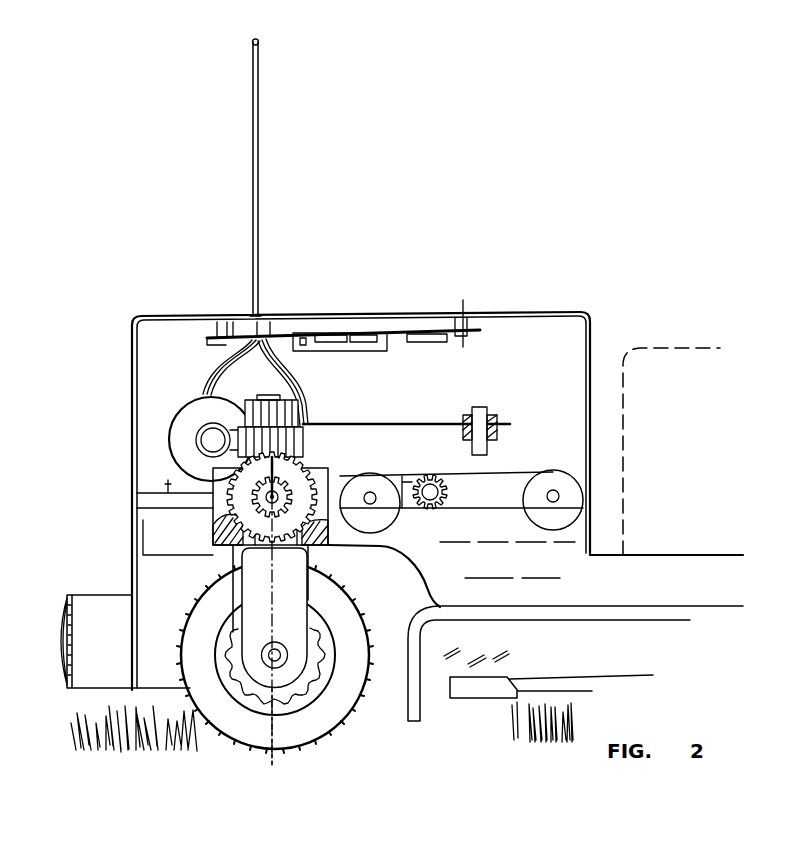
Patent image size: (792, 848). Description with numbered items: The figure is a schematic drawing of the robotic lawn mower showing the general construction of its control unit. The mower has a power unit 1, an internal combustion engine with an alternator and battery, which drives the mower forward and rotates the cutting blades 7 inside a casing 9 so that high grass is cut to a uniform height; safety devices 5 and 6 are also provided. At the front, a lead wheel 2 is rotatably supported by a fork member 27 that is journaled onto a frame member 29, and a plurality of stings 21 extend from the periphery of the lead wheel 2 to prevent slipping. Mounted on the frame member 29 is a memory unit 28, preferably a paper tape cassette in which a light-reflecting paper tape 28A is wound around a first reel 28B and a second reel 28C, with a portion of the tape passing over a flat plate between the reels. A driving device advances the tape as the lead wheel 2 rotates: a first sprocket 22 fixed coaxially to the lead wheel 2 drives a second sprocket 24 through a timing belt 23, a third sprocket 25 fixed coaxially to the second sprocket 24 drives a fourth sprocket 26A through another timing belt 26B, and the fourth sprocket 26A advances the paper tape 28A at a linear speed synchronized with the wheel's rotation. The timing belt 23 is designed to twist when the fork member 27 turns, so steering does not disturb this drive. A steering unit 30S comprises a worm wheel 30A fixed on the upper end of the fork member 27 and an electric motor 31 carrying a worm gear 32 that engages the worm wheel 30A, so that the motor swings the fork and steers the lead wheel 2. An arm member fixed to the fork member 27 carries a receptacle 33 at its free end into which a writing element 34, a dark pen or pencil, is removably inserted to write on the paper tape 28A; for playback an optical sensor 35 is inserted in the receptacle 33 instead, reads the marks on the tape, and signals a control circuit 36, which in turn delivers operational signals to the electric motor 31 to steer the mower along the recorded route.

The power unit 1 is at (693, 360).
The lead wheel 2 is at (235, 725).
The safety device 5 is at (58, 668).
The safety device 6 is at (258, 213).
The cutting blades 7 is at (485, 700).
The casing 9 is at (405, 700).
The stings 21 is at (312, 735).
The first sprocket 22 is at (310, 688).
The timing belt 23 is at (235, 580).
The second sprocket 24 is at (213, 480).
The third sprocket 25 is at (293, 485).
The fourth sprocket 26A is at (448, 490).
The timing belt 26B is at (403, 510).
The fork member 27 is at (290, 590).
The memory unit 28 is at (548, 475).
The paper tape 28A is at (513, 470).
The first reel 28B is at (455, 572).
The second reel 28C is at (522, 512).
The frame member 29 is at (222, 510).
The worm wheel 30A is at (245, 412).
The steering unit 30S is at (62, 336).
The electric motor 31 is at (190, 430).
The worm gear 32 is at (212, 442).
The receptacle 33 is at (463, 432).
The writing element 34 is at (480, 413).
The optical sensor 35 is at (504, 410).
The control circuit 36 is at (372, 333).